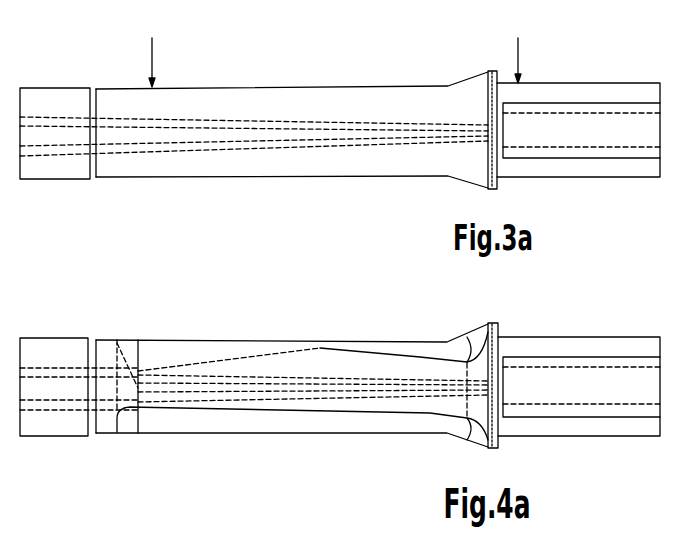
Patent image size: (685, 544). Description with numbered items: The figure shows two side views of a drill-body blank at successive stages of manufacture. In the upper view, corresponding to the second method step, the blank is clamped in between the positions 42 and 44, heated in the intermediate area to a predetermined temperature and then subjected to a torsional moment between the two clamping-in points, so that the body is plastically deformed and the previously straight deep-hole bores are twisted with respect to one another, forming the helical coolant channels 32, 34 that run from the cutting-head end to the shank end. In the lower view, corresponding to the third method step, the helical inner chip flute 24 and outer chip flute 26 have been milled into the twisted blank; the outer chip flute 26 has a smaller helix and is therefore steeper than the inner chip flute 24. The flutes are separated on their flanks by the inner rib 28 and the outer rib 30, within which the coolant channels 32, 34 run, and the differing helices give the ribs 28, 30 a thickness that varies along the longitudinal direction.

In FIG. 4A, the inner chip flute 24 is at (325, 420).
In FIG. 4A, the outer chip flute 26 is at (402, 350).
In FIG. 4A, the inner rib 28 is at (187, 355).
In FIG. 3A, the outer rib 30 is at (582, 130).
In FIG. 4A, the outer rib 30 is at (185, 437).
In FIG. 3A, the coolant channel 32 is at (237, 152).
In FIG. 4A, the coolant channel 32 is at (248, 395).
In FIG. 3A, the coolant channel 34 is at (221, 122).
In FIG. 4A, the coolant channel 34 is at (243, 380).
In FIG. 3A, the clamping-in position 42 is at (153, 56).
In FIG. 3A, the clamping-in position 44 is at (518, 50).